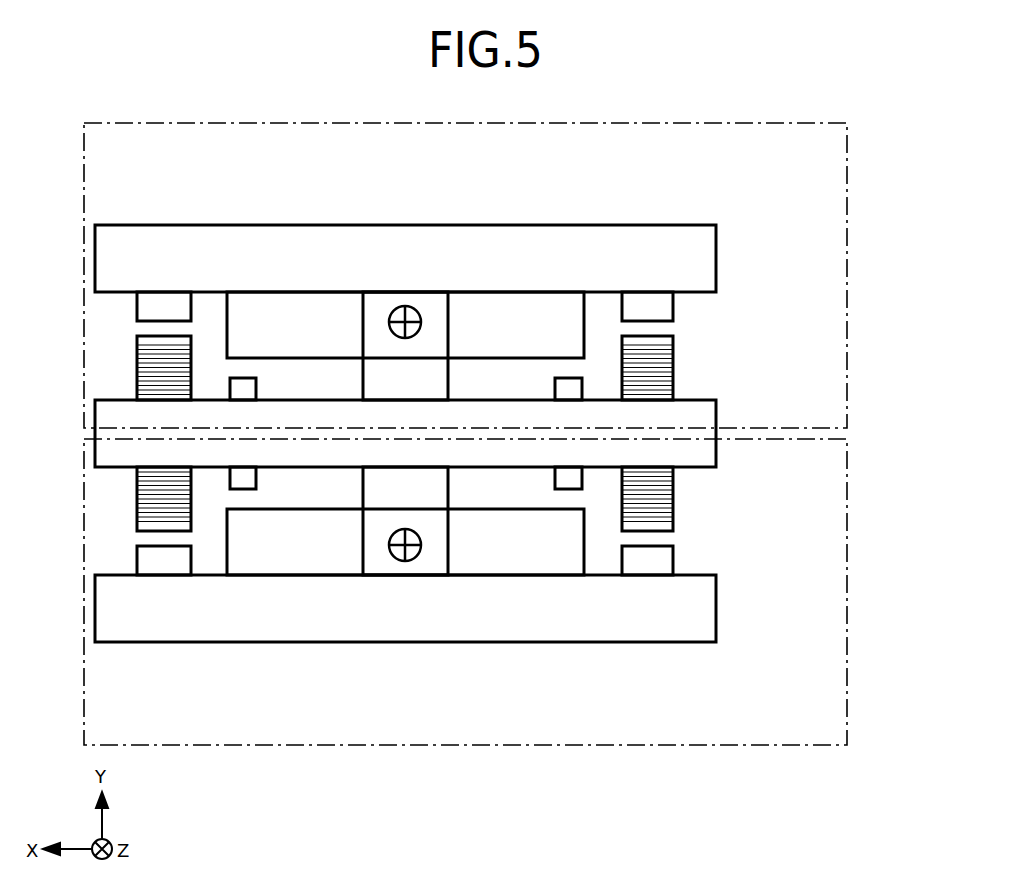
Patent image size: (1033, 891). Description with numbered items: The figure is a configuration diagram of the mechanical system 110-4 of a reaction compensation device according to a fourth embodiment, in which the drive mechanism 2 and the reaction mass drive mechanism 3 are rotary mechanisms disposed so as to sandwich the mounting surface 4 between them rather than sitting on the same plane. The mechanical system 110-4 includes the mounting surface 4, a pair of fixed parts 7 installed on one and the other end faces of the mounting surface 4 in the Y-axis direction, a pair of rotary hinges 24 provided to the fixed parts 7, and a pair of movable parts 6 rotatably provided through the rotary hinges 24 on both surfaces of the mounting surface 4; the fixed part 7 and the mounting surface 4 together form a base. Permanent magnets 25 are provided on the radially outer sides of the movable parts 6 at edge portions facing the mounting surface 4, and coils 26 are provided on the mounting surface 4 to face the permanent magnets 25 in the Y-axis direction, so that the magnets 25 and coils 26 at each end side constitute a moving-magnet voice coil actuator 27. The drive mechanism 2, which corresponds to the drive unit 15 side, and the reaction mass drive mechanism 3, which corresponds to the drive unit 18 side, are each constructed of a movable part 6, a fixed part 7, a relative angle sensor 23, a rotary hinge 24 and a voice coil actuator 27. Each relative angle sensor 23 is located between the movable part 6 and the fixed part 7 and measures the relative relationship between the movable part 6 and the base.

The mechanical system 110-4 is at (830, 220).
The drive unit 15 is at (847, 168).
The drive unit 18 is at (847, 700).
The drive mechanism 2 is at (805, 132).
The reaction mass drive mechanism 3 is at (805, 517).
The mounting surface 4 is at (716, 418).
The movable part 6 is at (509, 242).
The fixed part 7 is at (428, 309).
The relative angle sensor 23 is at (568, 387).
The rotary hinge 24 is at (428, 329).
The permanent magnet 25 is at (660, 309).
The coil 26 is at (660, 343).
The voice coil actuator 27 is at (760, 290).